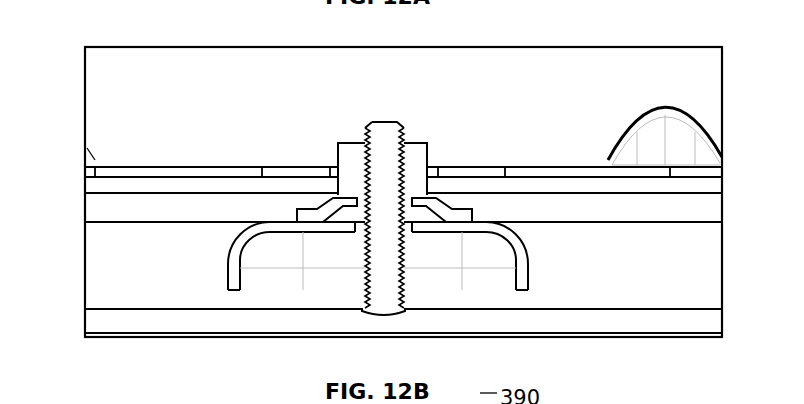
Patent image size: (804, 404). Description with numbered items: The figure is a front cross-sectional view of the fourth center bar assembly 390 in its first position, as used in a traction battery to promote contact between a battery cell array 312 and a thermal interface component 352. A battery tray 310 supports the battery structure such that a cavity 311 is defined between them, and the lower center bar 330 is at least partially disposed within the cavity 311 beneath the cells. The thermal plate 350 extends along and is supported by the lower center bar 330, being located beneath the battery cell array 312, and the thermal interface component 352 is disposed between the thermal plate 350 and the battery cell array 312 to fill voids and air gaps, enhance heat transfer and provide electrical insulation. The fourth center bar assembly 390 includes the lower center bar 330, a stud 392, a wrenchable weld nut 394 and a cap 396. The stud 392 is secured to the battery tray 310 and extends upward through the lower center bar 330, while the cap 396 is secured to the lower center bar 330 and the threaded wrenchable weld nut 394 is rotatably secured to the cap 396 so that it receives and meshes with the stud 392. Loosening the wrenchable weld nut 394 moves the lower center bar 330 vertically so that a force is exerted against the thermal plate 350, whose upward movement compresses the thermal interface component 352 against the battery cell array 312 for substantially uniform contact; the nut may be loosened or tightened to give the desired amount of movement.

The battery tray 310 is at (192, 315).
The cavity 311 is at (138, 264).
The battery cell array 312 is at (107, 82).
The lower center bar 330 is at (258, 262).
The thermal plate 350 is at (98, 210).
The thermal interface component 352 is at (95, 187).
The fourth center bar assembly 390 is at (453, 189).
The stud 392 is at (390, 290).
The wrenchable weld nut 394 is at (353, 168).
The cap 396 is at (463, 213).